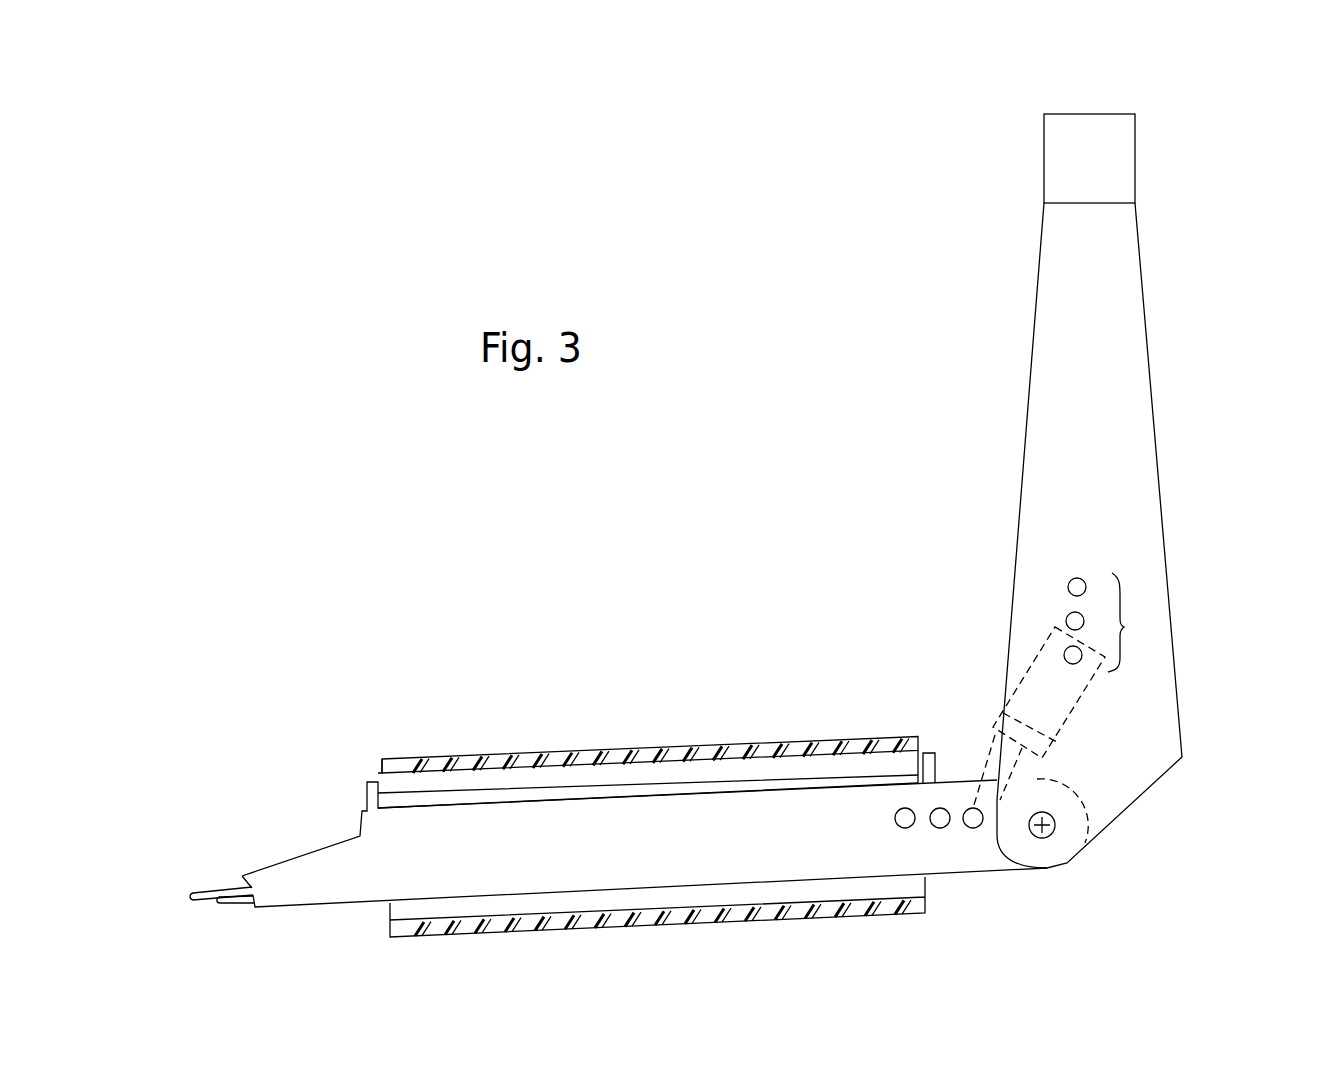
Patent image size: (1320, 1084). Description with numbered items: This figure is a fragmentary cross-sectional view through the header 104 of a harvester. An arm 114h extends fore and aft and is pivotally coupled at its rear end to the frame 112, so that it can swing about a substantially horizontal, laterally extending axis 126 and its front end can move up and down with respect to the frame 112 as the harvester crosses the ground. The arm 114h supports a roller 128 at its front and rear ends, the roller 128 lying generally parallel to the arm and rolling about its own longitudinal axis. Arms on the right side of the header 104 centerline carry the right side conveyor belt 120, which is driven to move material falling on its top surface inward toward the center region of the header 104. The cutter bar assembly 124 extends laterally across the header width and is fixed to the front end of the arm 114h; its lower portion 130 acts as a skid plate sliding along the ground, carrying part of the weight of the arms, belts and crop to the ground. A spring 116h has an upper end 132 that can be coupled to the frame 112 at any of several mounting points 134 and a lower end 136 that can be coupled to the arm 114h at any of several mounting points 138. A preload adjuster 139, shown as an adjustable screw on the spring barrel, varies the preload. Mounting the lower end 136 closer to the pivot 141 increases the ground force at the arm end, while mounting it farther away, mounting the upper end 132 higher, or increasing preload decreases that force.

The header 104 is at (1091, 114).
The frame 112 is at (1039, 268).
The arm 114h is at (497, 845).
The spring 116h is at (1040, 658).
The right side conveyor belt 120 is at (638, 747).
The cutter bar assembly 124 is at (195, 892).
The axis 126 is at (1050, 837).
The roller 128 is at (397, 780).
The lower portion of cutter bar assembly 130 is at (233, 898).
The upper end of spring 132 is at (1068, 582).
The mounting points 134 is at (1124, 627).
The lower end of spring 136 is at (990, 790).
The mounting points 138 is at (890, 838).
The preload adjuster 139 is at (1002, 712).
The pivot 141 is at (1053, 812).